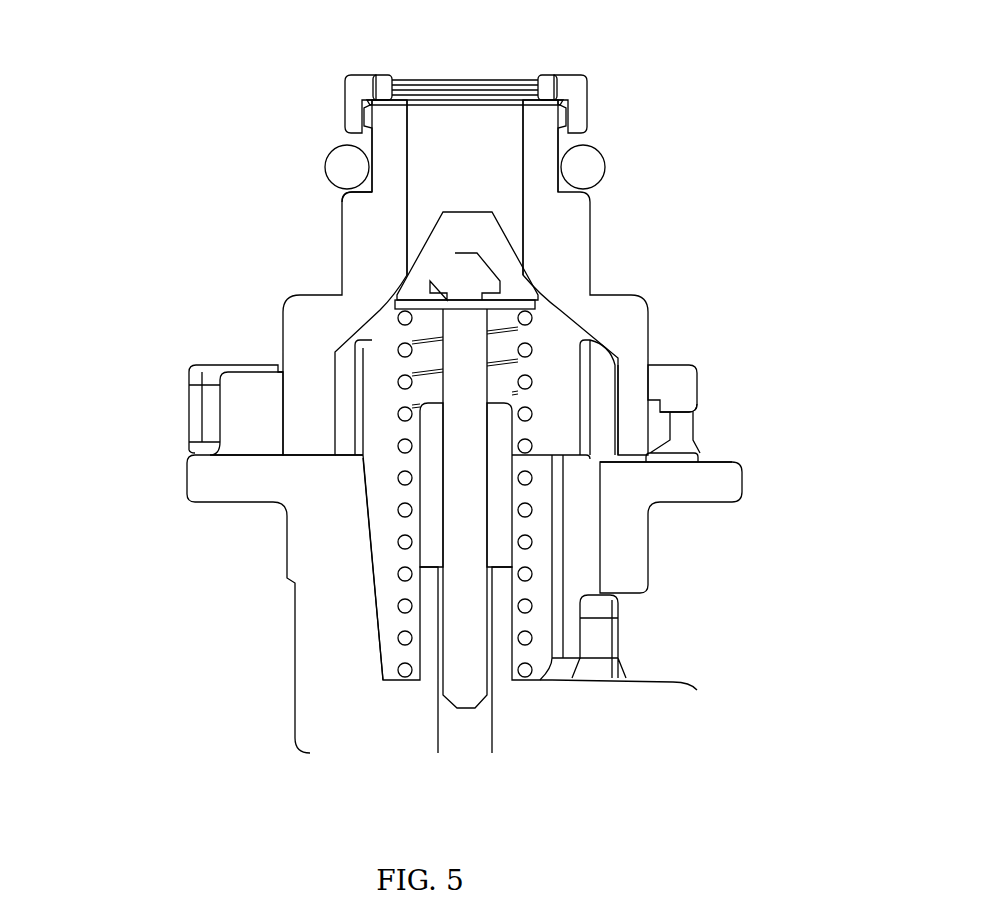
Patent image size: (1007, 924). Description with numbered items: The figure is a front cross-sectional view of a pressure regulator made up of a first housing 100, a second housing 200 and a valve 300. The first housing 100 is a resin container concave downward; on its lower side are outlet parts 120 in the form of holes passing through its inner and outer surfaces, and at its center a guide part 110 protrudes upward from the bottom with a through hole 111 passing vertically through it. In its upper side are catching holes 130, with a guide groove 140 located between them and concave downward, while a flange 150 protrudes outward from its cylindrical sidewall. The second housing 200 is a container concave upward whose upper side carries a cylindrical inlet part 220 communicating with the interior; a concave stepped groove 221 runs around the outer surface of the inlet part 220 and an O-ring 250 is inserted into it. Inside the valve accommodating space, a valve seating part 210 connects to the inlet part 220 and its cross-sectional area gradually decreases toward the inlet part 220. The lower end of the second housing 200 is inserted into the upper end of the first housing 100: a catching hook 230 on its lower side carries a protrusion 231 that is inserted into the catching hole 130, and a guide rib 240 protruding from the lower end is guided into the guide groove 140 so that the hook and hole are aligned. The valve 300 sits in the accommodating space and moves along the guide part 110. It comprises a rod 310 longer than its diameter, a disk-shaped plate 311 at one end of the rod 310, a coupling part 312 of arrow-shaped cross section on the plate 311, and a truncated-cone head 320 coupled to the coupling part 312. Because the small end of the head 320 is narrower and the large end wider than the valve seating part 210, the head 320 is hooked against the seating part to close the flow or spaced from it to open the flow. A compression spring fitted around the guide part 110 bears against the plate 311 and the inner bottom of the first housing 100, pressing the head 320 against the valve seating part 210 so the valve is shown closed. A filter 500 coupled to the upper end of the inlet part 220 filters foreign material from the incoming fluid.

The first housing 100 is at (650, 540).
The guide part 110 is at (420, 560).
The through hole 111 is at (420, 488).
The outlet part 120 is at (605, 648).
The catching hole 130 is at (678, 437).
The guide groove 140 is at (205, 415).
The flange 150 is at (730, 480).
The second housing 200 is at (515, 277).
The valve seating part 210 is at (342, 280).
The inlet part 220 is at (592, 240).
The stepped groove 221 is at (343, 212).
The catching hook 230 is at (650, 365).
The protrusion 231 is at (703, 398).
The guide rib 240 is at (257, 400).
The O-ring 250 is at (603, 165).
The valve 300 is at (436, 407).
The rod 310 is at (453, 677).
The plate 311 is at (509, 298).
The coupling part 312 is at (467, 265).
The head 320 is at (443, 222).
The filter 500 is at (590, 103).